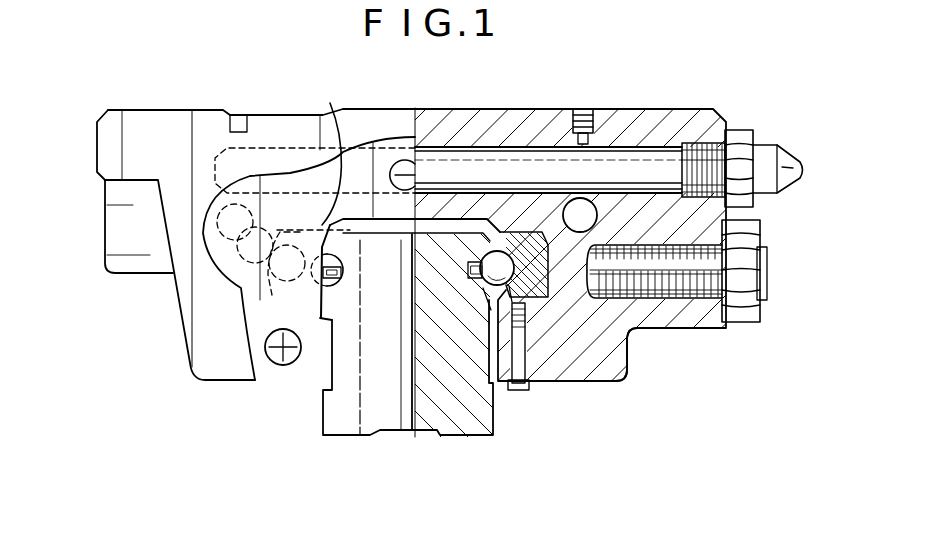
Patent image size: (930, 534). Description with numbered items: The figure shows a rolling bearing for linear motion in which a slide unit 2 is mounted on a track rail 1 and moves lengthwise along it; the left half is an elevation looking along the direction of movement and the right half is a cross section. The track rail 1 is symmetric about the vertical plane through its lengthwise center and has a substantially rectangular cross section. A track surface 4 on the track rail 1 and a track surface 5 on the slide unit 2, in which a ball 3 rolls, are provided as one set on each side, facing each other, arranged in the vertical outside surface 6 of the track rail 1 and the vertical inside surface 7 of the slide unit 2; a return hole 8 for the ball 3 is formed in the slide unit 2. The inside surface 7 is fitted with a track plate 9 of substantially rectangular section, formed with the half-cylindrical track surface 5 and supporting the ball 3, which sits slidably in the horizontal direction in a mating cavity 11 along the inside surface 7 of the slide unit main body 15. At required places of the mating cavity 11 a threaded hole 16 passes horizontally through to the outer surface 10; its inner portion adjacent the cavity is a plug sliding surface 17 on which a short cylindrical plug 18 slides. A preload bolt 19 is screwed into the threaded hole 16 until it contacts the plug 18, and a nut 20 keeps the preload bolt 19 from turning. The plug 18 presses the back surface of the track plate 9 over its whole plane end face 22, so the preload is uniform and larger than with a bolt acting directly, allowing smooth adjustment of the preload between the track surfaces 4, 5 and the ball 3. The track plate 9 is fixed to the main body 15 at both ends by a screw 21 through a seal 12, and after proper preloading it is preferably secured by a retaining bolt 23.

The track rail 1 is at (343, 427).
The slide unit 2 is at (415, 108).
The ball 3 is at (323, 283).
The track surface 4 is at (370, 433).
The track surface 5 is at (413, 430).
The vertical outside surface 6 is at (318, 342).
The vertical inside surface 7 is at (323, 388).
The return hole 8 is at (593, 203).
The track plate 9 is at (290, 300).
The outer surface 10 is at (727, 212).
The mating cavity 11 is at (310, 233).
The seal 12 is at (250, 333).
The slide unit main body 15 is at (563, 117).
The threaded hole 16 is at (683, 288).
The plug sliding surface 17 is at (618, 352).
The plug 18 is at (553, 245).
The preload bolt 19 is at (703, 287).
The nut 20 is at (752, 310).
The screw 21 is at (402, 160).
The end face 22 is at (540, 300).
The retaining bolt 23 is at (517, 392).